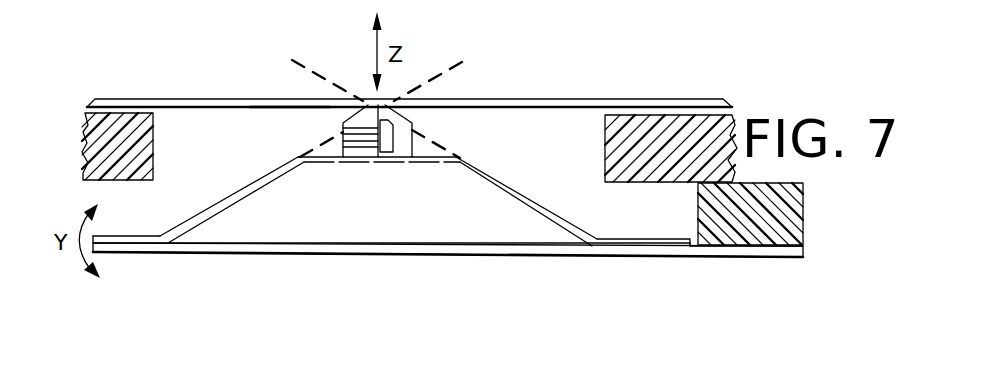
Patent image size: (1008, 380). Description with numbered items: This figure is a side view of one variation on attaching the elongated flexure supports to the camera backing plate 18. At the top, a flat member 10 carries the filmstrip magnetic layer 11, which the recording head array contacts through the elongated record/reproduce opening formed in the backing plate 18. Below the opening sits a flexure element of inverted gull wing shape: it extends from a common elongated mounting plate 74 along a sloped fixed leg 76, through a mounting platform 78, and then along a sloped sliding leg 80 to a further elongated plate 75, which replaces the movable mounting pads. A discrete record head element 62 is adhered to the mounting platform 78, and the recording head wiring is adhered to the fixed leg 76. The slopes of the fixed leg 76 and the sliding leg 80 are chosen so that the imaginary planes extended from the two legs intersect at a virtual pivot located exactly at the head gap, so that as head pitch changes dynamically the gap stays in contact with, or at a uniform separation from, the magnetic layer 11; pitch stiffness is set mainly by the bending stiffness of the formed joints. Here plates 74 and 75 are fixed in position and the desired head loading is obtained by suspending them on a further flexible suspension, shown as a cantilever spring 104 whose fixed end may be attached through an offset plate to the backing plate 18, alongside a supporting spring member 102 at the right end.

The top plate 10 is at (560, 99).
The filmstrip magnetic layer 11 is at (277, 108).
The backing plate 18 is at (150, 163).
The record head elements 62 is at (431, 98).
The elongated mounting plate 74 is at (140, 235).
The further elongated plate 75 is at (610, 239).
The fixed leg 76 is at (215, 213).
The mounting platform 78 is at (373, 160).
The sliding leg 80 is at (567, 153).
The independent spring 102 is at (790, 230).
The cantilever spring 104 is at (115, 253).